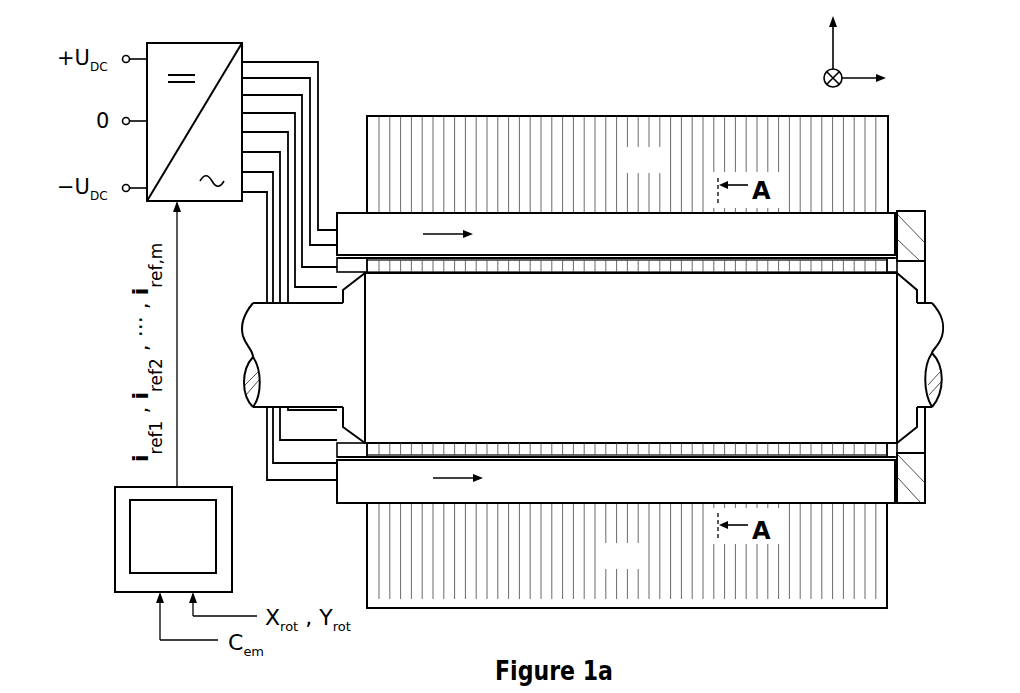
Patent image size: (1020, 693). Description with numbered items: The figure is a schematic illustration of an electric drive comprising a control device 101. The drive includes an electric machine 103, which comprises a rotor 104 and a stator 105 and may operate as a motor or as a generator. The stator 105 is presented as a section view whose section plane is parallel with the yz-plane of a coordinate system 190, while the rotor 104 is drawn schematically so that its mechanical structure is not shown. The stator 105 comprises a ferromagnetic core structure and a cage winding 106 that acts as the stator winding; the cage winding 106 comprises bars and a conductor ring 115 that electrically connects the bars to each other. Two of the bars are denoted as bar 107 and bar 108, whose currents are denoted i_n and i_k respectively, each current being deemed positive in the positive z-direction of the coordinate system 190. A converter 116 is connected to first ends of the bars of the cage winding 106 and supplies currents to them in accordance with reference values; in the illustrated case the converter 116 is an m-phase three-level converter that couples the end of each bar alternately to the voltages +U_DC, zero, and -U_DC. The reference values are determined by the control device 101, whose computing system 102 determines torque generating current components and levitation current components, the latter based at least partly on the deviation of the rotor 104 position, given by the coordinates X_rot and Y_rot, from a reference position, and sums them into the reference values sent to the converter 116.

The control device 101 is at (205, 487).
The computing system 102 is at (192, 547).
The electric machine 103 is at (510, 116).
The rotor 104 is at (622, 368).
The stator 105 is at (663, 170).
The cage winding 106 is at (360, 502).
The bar 107 is at (636, 249).
The bar 108 is at (609, 493).
The conductor ring 115 is at (910, 210).
The converter 116 is at (180, 43).
The coordinate system 190 is at (886, 60).